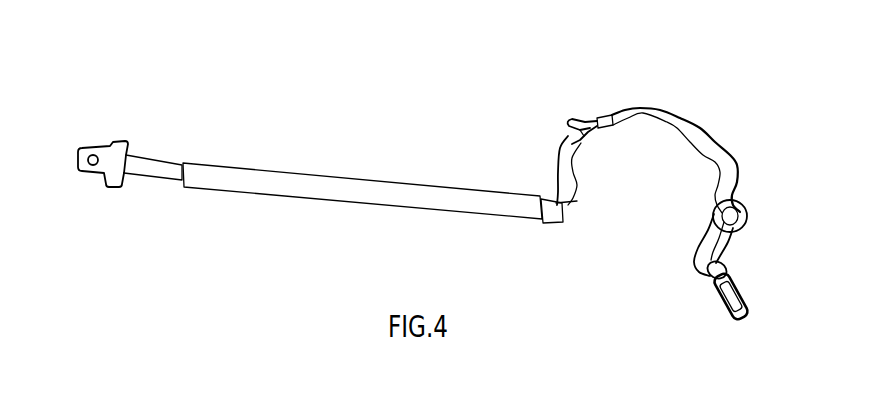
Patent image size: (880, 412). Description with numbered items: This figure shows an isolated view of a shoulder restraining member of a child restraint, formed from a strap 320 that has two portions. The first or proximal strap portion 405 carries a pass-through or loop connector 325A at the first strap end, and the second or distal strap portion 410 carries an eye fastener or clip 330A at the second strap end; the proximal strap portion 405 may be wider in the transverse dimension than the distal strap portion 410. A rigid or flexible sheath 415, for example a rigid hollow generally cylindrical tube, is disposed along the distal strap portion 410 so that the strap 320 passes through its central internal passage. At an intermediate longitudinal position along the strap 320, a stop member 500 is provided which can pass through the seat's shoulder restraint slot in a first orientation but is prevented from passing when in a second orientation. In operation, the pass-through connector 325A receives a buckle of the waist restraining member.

The eye fastener or clip 330A is at (83, 151).
The strap 320 is at (155, 161).
The sheath 415 is at (333, 184).
The distal strap portion 410 is at (282, 212).
The stop member 500 is at (587, 121).
The proximal strap portion 405 is at (716, 130).
The pass-through or loop connector 325A is at (729, 322).